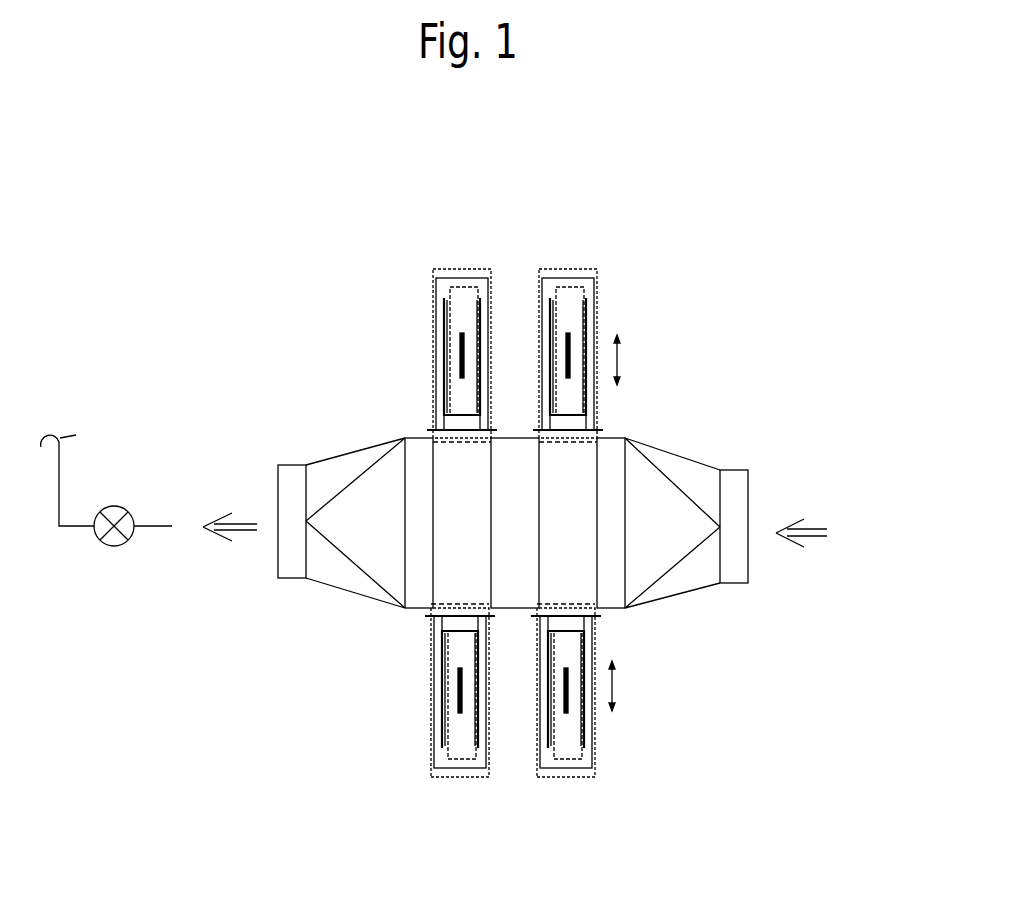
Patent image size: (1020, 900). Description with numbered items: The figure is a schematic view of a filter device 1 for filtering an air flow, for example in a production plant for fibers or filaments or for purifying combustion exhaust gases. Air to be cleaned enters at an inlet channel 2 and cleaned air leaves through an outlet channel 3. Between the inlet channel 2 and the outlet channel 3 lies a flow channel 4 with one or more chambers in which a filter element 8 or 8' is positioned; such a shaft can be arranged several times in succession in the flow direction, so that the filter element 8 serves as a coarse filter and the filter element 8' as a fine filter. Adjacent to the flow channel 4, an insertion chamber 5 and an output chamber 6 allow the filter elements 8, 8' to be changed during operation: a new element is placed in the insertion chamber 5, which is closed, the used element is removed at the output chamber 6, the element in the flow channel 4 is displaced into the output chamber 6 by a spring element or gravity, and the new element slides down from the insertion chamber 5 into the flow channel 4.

The filter device 1 is at (714, 222).
The inlet channel 2 is at (748, 487).
The outlet channel 3 is at (278, 485).
The flow channel 4 is at (462, 468).
The insertion chamber 5 is at (442, 285).
The output chamber 6 is at (476, 773).
The filter element 8 is at (625, 503).
The filter element 8' is at (467, 533).